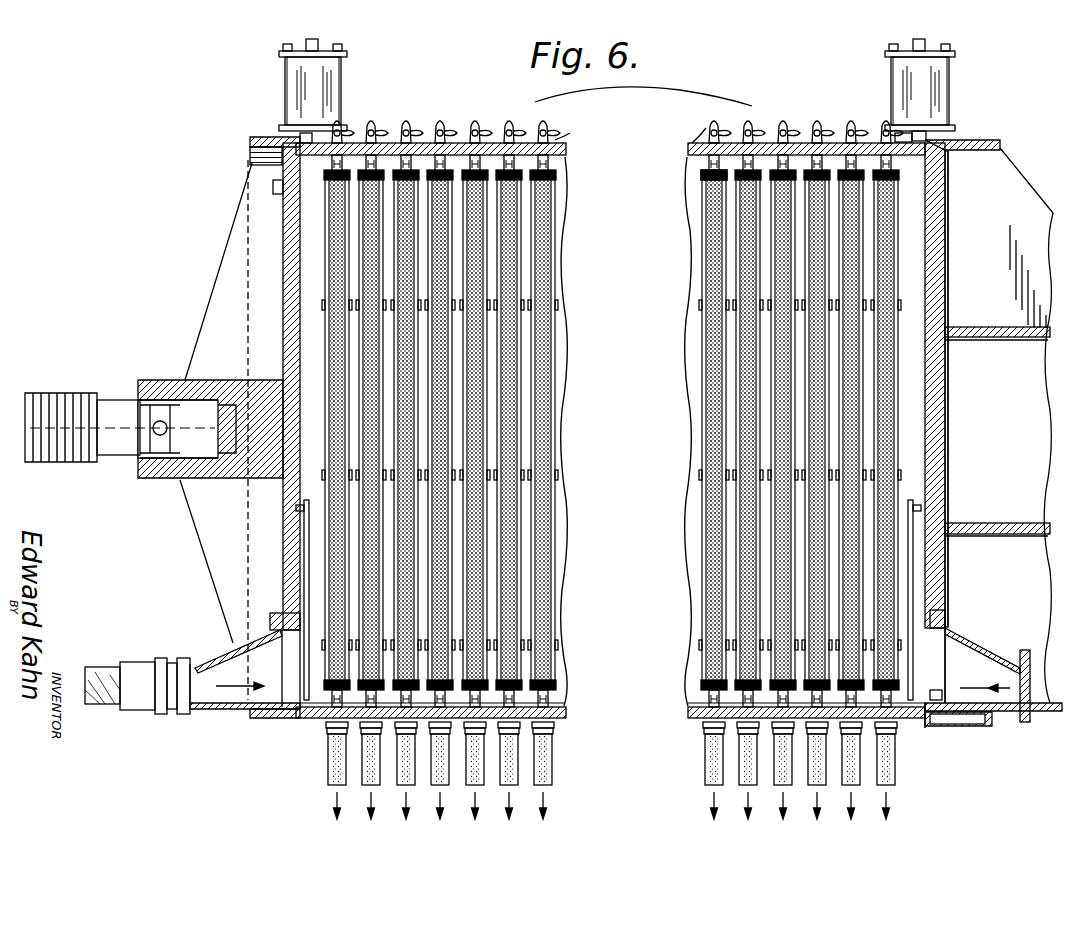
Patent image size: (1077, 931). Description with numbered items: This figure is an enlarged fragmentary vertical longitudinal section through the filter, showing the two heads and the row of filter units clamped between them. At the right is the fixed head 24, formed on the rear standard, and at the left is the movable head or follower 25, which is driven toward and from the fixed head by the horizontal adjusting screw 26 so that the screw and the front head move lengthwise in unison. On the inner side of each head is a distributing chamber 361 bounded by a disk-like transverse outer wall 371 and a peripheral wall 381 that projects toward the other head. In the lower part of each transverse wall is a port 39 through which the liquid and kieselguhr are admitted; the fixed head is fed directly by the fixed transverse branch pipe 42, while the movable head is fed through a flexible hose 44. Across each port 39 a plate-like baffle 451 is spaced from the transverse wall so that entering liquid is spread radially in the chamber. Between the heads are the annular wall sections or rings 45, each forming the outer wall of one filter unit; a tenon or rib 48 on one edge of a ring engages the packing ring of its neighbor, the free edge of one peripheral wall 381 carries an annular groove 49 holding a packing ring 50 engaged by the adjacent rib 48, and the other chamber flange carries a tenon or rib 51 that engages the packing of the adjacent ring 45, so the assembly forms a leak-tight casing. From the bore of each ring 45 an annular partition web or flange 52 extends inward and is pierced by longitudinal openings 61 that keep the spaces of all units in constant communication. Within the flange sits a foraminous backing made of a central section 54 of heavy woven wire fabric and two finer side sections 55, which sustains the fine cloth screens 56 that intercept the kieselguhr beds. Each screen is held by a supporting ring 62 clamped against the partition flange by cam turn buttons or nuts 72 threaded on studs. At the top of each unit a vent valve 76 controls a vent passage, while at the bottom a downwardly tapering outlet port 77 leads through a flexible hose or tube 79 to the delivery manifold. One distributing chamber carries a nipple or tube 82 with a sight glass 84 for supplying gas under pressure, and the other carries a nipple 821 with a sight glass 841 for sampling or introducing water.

The fixed head 24 is at (950, 245).
The movable head or follower 25 is at (283, 262).
The adjusting screw 26 is at (55, 402).
The port 39 is at (285, 655).
The fixed transverse branch pipe 42 is at (993, 686).
The flexible hose 44 is at (105, 668).
The annular wall section or ring 45 is at (325, 720).
The annular tenon or rib 48 is at (878, 740).
The annular groove 49 is at (920, 740).
The packing ring 50 is at (935, 704).
The annular tenon or rib 51 is at (300, 718).
The annular partition web or flange 52 is at (550, 178).
The central section 54 is at (552, 546).
The side sections 55 is at (552, 566).
The cloth or woven fabric screens 56 is at (552, 603).
The longitudinal openings 61 is at (560, 703).
The supporting ring 62 is at (703, 178).
The cam turn button or nut 72 is at (567, 440).
The vent valve 76 is at (445, 128).
The outlet port or passage 77 is at (562, 136).
The flexible hose or tube 79 is at (552, 780).
The nipple or tube 82 is at (282, 152).
The sight glass 84 is at (310, 92).
The distributing chamber 361 is at (300, 356).
The transverse outer wall 371 is at (283, 215).
The peripheral wall 381 is at (925, 722).
The baffle 451 is at (304, 540).
The nipple or tube 821 is at (925, 135).
The sight glass 841 is at (925, 92).